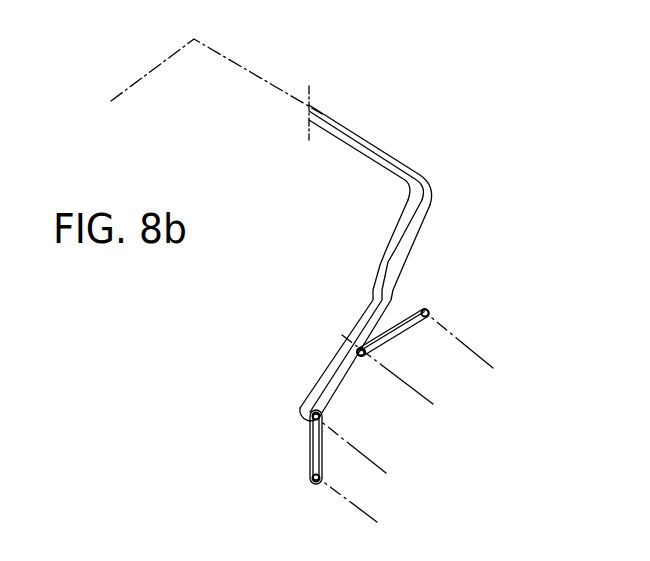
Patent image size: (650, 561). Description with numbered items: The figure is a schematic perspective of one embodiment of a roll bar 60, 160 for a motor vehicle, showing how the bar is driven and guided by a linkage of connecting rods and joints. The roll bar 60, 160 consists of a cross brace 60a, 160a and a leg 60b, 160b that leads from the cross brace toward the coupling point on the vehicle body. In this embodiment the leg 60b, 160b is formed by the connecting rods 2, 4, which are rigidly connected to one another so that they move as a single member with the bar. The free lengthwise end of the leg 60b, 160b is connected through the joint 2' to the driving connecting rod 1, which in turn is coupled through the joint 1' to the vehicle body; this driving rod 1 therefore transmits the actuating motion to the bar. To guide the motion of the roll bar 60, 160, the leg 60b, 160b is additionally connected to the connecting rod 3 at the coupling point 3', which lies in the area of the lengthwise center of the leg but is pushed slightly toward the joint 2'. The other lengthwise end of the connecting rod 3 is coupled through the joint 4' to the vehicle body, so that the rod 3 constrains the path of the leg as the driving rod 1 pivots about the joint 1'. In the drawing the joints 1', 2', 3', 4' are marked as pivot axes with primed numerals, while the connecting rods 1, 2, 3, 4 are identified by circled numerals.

The roll bar 60 is at (442, 240).
The roll bar 160 is at (442, 240).
The cross brace 60a is at (389, 132).
The cross brace 160a is at (343, 133).
The leg 60b is at (442, 310).
The leg 160b is at (403, 248).
The driving connecting rod 1 is at (278, 447).
The connecting rod 2 is at (329, 352).
The connecting rod 3 is at (405, 345).
The connecting rod 4 is at (329, 352).
The joint 1' is at (355, 498).
The joint 2' is at (366, 448).
The coupling point 3' is at (387, 384).
The joint 4' is at (468, 334).